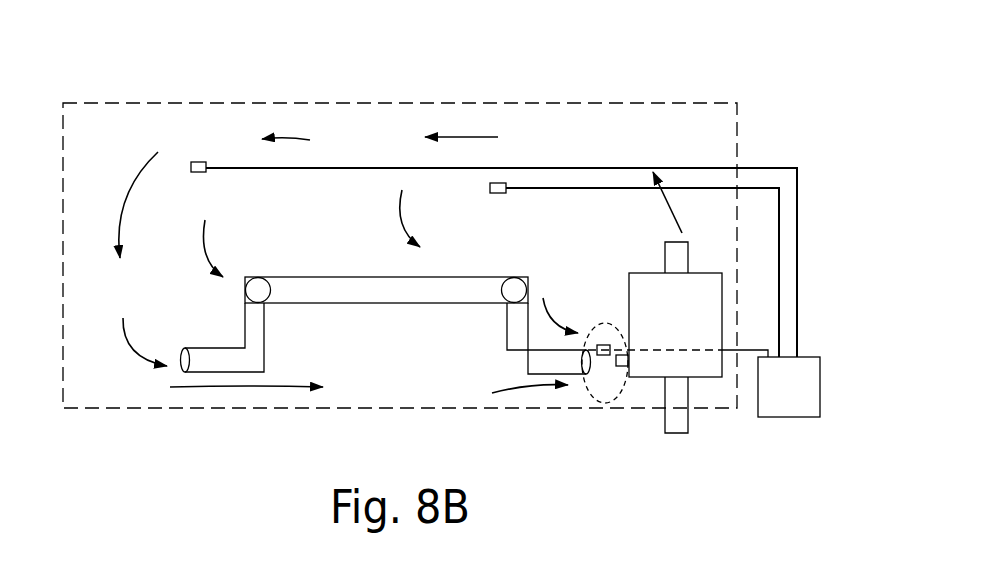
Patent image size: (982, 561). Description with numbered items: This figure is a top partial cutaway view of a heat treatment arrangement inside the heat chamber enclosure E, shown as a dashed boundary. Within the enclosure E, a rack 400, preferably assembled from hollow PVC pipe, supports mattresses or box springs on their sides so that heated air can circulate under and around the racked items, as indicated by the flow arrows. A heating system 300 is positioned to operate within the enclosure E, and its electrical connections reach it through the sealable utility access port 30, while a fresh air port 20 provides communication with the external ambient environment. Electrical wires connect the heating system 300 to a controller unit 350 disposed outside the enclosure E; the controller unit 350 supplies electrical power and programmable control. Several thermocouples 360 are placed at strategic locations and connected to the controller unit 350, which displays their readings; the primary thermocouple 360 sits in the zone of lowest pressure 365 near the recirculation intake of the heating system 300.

The enclosure E is at (702, 112).
The rack 400 is at (302, 287).
The thermocouple 360 is at (197, 172).
The heating system 300 is at (653, 322).
The controller unit 350 is at (772, 399).
The zone of lowest pressure 365 is at (600, 384).
The utility access port 30 is at (622, 367).
The fresh air port 20 is at (667, 425).